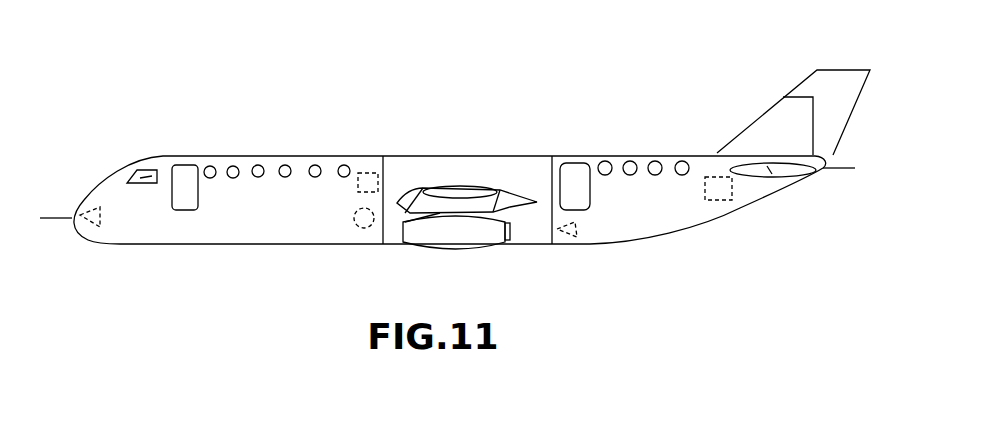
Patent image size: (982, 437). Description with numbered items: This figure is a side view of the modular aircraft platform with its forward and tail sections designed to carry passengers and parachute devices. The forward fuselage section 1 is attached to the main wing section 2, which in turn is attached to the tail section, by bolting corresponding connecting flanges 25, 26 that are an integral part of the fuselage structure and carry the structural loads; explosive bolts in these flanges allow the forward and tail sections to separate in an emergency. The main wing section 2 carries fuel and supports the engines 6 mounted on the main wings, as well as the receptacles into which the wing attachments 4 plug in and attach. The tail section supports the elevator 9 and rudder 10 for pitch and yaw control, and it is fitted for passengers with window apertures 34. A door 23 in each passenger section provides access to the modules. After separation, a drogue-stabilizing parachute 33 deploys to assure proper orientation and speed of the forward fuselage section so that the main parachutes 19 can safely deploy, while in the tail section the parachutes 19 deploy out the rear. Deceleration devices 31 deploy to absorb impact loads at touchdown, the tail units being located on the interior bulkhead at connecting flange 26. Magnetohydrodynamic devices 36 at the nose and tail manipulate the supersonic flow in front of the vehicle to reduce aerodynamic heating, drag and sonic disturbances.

The forward fuselage section 1 is at (203, 225).
The main wing section 2 is at (442, 165).
The wing attachments 4 is at (460, 192).
The engines 6 is at (455, 240).
The elevator 9 is at (777, 172).
The rudder 10 is at (817, 87).
The main parachutes 19 is at (367, 172).
The door 23 is at (183, 172).
The connecting flange 25 is at (383, 168).
The connecting flange 26 is at (552, 167).
The deceleration devices 31 is at (87, 190).
The drogue-stabilizing parachute 33 is at (358, 225).
The window aperture 34 is at (137, 172).
The magnetohydrodynamic devices 36 is at (55, 222).